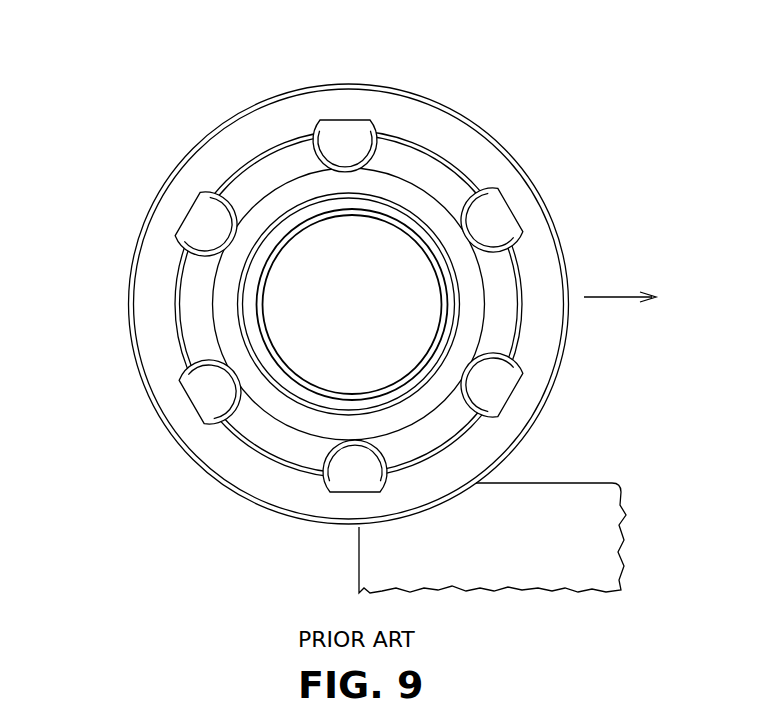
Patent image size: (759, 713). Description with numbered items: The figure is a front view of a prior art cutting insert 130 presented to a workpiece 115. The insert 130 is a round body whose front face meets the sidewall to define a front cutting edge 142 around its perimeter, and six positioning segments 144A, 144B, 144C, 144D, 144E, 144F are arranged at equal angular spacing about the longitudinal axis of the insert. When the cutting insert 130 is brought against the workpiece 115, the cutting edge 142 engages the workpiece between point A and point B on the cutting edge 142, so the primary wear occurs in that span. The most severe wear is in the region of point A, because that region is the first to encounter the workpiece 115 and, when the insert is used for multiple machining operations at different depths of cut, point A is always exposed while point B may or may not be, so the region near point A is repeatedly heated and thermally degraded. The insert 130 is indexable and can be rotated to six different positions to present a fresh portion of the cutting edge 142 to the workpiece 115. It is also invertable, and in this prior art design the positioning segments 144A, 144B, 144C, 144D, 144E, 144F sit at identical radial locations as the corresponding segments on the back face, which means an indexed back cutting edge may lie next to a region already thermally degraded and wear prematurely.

The cutting insert 130 is at (365, 281).
The front cutting edge 142 is at (234, 492).
The positioning segment 144A is at (335, 478).
The positioning segment 144B is at (207, 413).
The positioning segment 144C is at (180, 237).
The positioning segment 144D is at (357, 120).
The positioning segment 144E is at (494, 186).
The positioning segment 144F is at (515, 367).
The workpiece 115 is at (575, 492).
The point A is at (357, 527).
The point B is at (480, 481).